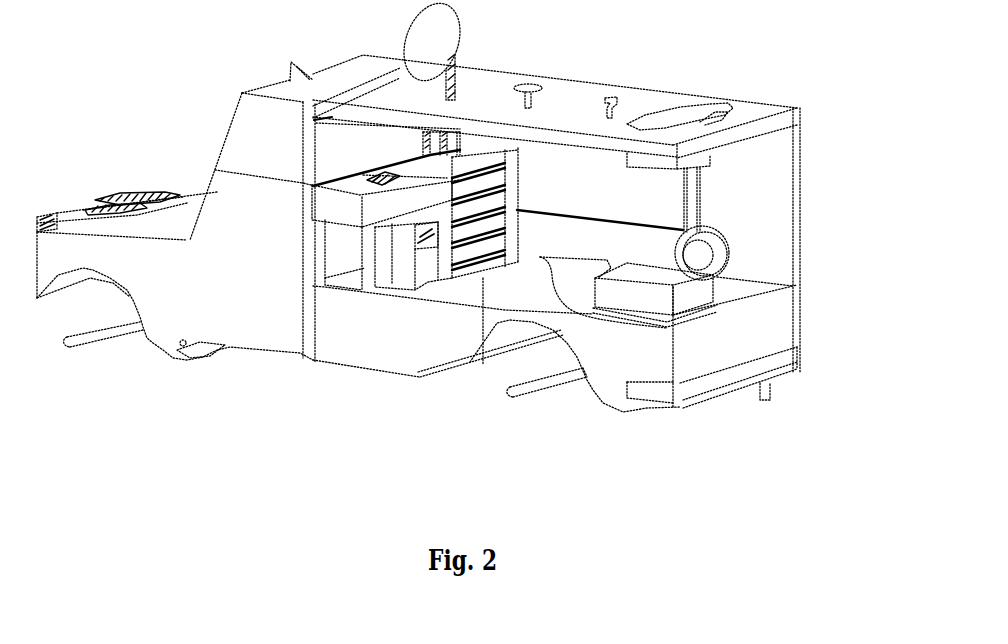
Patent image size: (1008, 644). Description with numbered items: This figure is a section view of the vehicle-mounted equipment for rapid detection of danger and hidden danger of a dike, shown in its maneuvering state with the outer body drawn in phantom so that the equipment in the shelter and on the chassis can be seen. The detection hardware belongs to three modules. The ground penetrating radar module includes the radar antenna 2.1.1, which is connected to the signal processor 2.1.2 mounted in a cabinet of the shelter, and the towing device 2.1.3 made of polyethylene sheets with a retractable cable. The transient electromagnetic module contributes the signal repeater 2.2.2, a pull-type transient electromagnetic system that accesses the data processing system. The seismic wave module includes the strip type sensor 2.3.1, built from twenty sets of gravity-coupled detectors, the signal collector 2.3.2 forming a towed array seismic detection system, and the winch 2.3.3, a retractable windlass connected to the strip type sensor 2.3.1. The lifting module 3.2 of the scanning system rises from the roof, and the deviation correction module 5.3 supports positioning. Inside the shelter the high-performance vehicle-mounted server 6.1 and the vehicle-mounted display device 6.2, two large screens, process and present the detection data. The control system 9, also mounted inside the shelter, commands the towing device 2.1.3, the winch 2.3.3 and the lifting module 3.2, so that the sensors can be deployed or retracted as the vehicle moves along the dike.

The radar antenna 2.1.1 is at (650, 299).
The signal processor 2.1.2 is at (483, 340).
The towing device 2.1.3 is at (690, 322).
The signal repeater 2.2.2 is at (483, 432).
The strip type sensor 2.3.1 is at (720, 237).
The signal collector 2.3.2 is at (483, 468).
The winch 2.3.3 is at (735, 267).
The lifting module 3.2 is at (715, 165).
The deviation correction module 5.3 is at (393, 228).
The server 6.1 is at (427, 250).
The display device 6.2 is at (625, 200).
The control system 9 is at (362, 200).